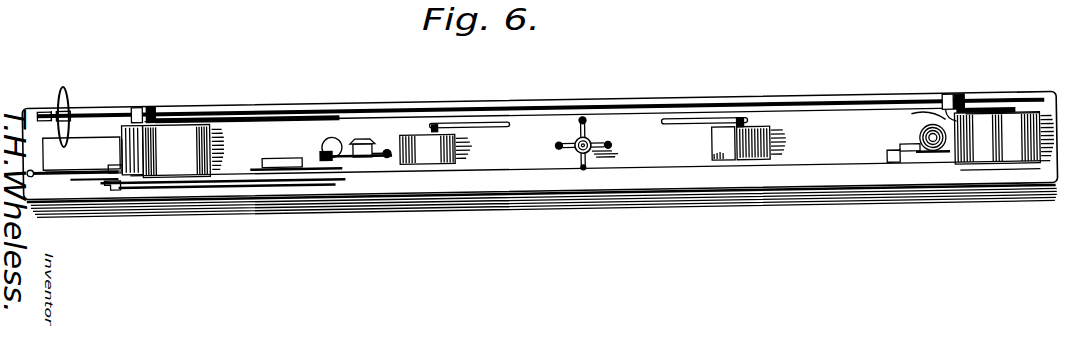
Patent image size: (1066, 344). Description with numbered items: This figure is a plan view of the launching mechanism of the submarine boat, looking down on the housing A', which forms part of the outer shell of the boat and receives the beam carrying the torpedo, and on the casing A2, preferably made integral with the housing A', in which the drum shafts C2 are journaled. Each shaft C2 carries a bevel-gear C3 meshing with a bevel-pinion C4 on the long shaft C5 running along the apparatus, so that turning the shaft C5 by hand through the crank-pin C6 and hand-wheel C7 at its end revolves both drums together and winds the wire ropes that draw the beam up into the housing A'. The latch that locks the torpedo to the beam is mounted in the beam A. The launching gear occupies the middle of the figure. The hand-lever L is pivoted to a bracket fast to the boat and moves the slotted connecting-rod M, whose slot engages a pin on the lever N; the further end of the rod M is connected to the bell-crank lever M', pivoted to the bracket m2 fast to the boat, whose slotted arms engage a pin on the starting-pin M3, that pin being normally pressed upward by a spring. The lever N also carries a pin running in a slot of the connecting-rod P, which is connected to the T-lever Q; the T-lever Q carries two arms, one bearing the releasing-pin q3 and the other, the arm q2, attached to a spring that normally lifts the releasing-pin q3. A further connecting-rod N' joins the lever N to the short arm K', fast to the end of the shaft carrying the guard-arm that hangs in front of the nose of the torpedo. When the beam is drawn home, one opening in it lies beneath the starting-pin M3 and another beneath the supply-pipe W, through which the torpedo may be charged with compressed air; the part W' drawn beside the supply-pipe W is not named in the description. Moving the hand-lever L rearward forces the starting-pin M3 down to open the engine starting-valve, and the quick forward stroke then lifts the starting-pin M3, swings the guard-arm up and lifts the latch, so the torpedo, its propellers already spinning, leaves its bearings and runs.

The shaft C5 is at (252, 106).
The crank-pin C6 is at (47, 101).
The hand-wheel C7 is at (70, 90).
The bevel-pinion C4 is at (152, 101).
The bevel-gear C3 is at (180, 107).
The shaft C2 is at (992, 113).
The beam A is at (83, 154).
The casing A2 is at (588, 146).
The housing A' is at (763, 138).
The hand-lever L is at (73, 186).
The short arm K' is at (108, 210).
The connecting-rod N' is at (223, 210).
The lever N is at (228, 215).
The connecting-rod M is at (285, 159).
The connecting-rod P is at (327, 158).
The releasing-pin q3 is at (324, 142).
The T-lever Q is at (352, 148).
The arm q2 is at (386, 147).
The supply-pipe W is at (580, 143).
The wheel handle W' is at (612, 135).
The bracket m2 is at (913, 130).
The bell-crank lever M' is at (883, 188).
The starting-pin M3 is at (929, 152).